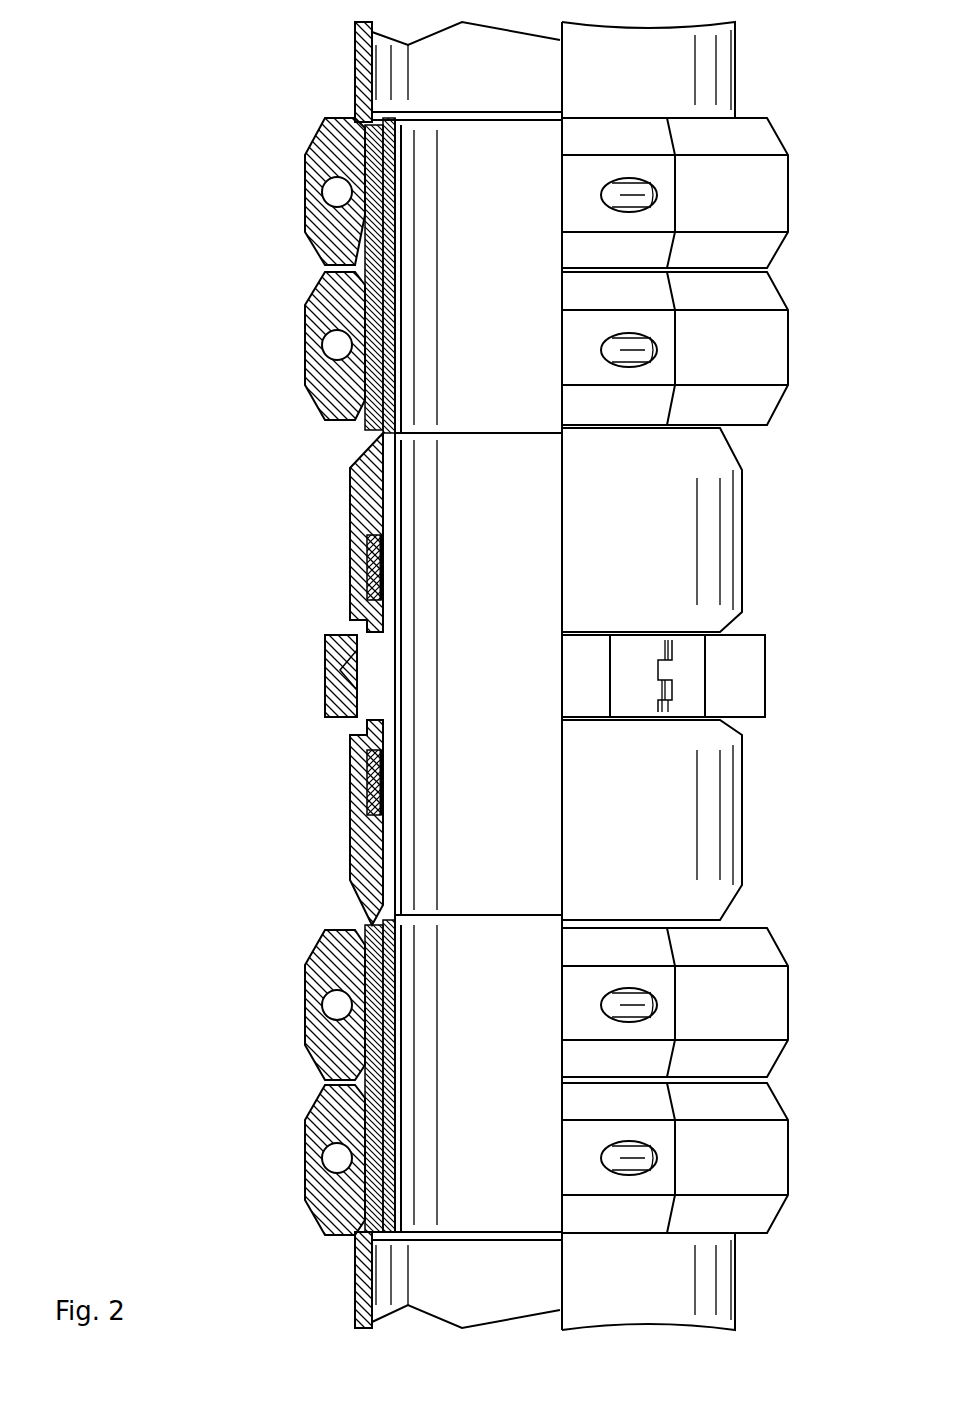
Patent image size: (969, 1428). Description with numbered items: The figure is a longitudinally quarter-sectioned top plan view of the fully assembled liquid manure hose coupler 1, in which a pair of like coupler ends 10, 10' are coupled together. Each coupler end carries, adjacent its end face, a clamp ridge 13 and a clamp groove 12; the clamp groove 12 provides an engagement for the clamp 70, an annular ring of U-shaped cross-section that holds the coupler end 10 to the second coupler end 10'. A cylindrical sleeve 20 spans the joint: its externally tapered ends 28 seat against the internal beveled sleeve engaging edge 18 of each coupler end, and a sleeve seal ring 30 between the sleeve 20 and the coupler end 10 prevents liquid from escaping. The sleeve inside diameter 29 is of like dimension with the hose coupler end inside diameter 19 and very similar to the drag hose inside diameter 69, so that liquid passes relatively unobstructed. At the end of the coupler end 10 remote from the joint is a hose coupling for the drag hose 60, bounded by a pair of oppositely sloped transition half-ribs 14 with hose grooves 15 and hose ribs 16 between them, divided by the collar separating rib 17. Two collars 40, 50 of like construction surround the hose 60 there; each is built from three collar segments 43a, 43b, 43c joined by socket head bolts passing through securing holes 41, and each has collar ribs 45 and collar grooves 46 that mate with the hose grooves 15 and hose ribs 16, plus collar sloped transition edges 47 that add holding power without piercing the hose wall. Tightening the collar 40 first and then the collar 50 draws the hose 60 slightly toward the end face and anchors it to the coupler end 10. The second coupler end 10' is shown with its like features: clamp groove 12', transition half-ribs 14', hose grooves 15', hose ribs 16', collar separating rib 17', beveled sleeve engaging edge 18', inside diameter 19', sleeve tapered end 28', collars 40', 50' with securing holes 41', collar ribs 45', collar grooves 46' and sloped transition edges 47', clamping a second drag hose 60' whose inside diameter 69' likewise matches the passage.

The hose coupler 1 is at (152, 152).
The coupler end 10 is at (330, 822).
The second coupler end 10' is at (331, 532).
The clamp groove 12 is at (315, 734).
The wedge surface 12' is at (322, 616).
The clamp ridge 13 is at (340, 682).
The transition half-ribs 14 is at (442, 1080).
The tube wall 14' is at (445, 276).
The hose grooves 15 is at (331, 916).
The clamp end 15' is at (331, 446).
The hose ribs 16 is at (430, 1076).
The inner sleeve 16' is at (434, 275).
The collar separating rib 17 is at (429, 1108).
The sleeve portion 17' is at (435, 238).
The beveled sleeve engaging edge 18 is at (434, 903).
The sleeve end 18' is at (437, 463).
The hose coupler end inside diameter 19 is at (475, 1073).
The body section 19' is at (478, 275).
The sleeve 20 is at (400, 697).
The sleeve tapered ends 28 is at (333, 868).
The wedge back face 28' is at (427, 535).
The sleeve inside diameter 29 is at (525, 789).
The sleeve seal ring 30 is at (366, 778).
The collar 40 is at (536, 990).
The clamp 40' is at (541, 362).
The securing hole 41 is at (279, 1003).
The clamp bolt hole 41' is at (286, 333).
The collar segment 43a is at (750, 948).
The collar segment 43b is at (668, 1025).
The collar segment 43c is at (320, 1041).
The collar ribs 45 is at (277, 949).
The clamp jaw 45' is at (276, 408).
The collar grooves 46 is at (302, 1078).
The clamp insert 46' is at (308, 277).
The collar sloped transition edges 47 is at (279, 1061).
The clamp lower jaw 47' is at (279, 298).
The second collar 50 is at (576, 1156).
The second clamp 50' is at (573, 208).
The drag hose 60 is at (677, 1281).
The tube end 60' is at (681, 70).
The drag hose inside diameter 69 is at (458, 1280).
The tube section 69' is at (458, 72).
The clamp 70 is at (768, 690).